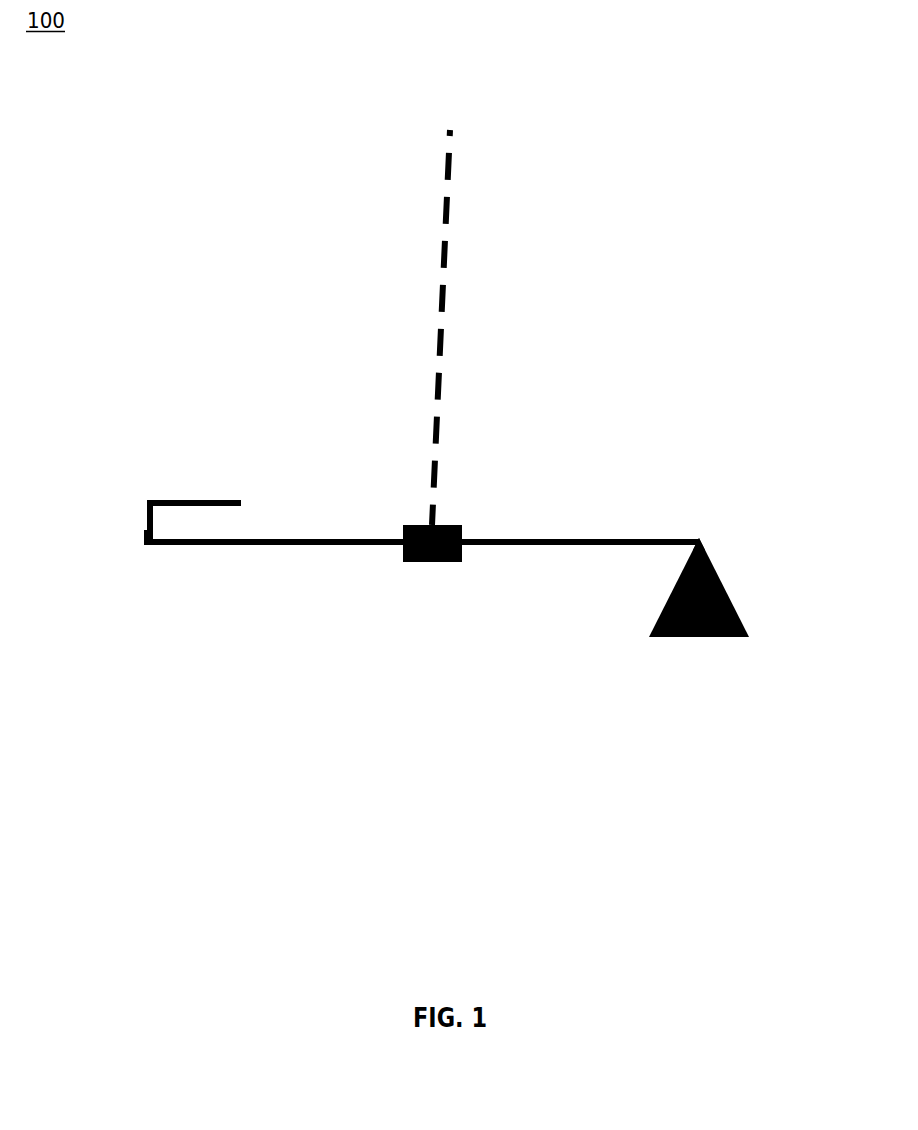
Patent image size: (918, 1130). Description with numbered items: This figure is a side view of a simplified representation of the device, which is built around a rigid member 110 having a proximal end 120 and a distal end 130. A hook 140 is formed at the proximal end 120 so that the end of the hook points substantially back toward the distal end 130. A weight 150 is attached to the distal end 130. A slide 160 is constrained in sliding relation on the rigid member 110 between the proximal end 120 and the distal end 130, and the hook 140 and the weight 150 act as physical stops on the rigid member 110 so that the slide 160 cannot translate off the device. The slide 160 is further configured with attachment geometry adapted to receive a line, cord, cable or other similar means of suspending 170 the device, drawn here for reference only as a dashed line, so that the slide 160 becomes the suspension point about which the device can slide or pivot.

The rigid member 110 is at (197, 497).
The proximal end 120 is at (152, 551).
The distal end 130 is at (705, 527).
The hook 140 is at (312, 543).
The weight 150 is at (693, 637).
The slide 160 is at (458, 525).
The means of suspending 170 is at (447, 290).